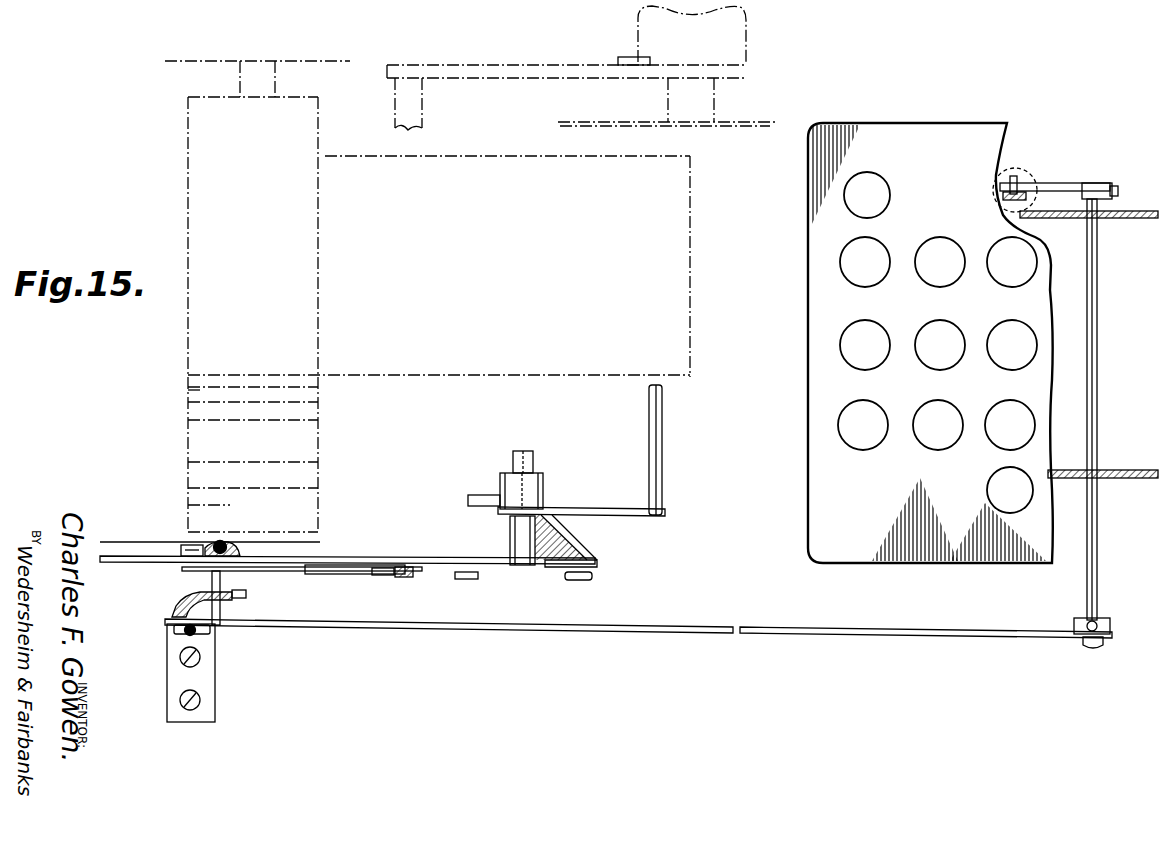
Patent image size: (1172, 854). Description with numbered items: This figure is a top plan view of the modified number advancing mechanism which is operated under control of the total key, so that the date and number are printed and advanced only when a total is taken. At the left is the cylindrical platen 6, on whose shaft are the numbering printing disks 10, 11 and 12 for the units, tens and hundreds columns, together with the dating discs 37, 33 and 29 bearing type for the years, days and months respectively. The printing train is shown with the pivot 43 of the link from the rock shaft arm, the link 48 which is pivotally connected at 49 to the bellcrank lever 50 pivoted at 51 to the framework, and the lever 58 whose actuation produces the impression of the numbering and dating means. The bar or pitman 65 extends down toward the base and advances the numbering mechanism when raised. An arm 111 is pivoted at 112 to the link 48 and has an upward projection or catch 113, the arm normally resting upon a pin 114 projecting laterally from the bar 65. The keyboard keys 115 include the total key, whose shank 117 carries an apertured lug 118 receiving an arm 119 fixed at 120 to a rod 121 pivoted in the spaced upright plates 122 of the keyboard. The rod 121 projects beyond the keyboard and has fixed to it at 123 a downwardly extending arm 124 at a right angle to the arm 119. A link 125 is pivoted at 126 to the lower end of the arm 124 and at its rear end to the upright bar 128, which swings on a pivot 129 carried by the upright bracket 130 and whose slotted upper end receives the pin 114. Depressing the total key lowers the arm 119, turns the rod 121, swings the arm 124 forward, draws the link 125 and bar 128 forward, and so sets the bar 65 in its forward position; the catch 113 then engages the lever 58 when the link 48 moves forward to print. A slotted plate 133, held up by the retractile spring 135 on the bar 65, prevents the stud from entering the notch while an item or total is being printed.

The cylindrical platen 6 is at (322, 212).
The printing disk 10 is at (318, 383).
The printing disk 11 is at (190, 390).
The printing disk 12 is at (308, 411).
The disc 29 is at (210, 502).
The disc 33 is at (300, 480).
The disc 37 is at (305, 455).
The pivot 43 is at (410, 105).
The link 48 is at (318, 574).
The pivot 49 is at (585, 580).
The bellcrank lever 50 is at (585, 556).
The pivot 51 is at (548, 527).
The lever 58 is at (418, 578).
The bar 65 is at (250, 556).
The arm 111 is at (262, 574).
The pivot 112 is at (465, 580).
The projection 113 is at (386, 576).
The pin 114 is at (212, 583).
The keys 115 is at (925, 441).
The shank 117 is at (1028, 197).
The apertured lug 118 is at (1016, 177).
The arm 119 is at (1070, 173).
The fixing 120 is at (1110, 185).
The rod 121 is at (1098, 320).
The upright plates 122 is at (1130, 219).
The fixing 123 is at (1086, 623).
The arm 124 is at (1108, 620).
The link 125 is at (658, 633).
The pivot 126 is at (1092, 648).
The upright pivotal support 128 is at (176, 606).
The pivot 129 is at (183, 633).
The upright bracket 130 is at (182, 672).
The plate 133 is at (185, 545).
The retractile spring 135 is at (238, 546).